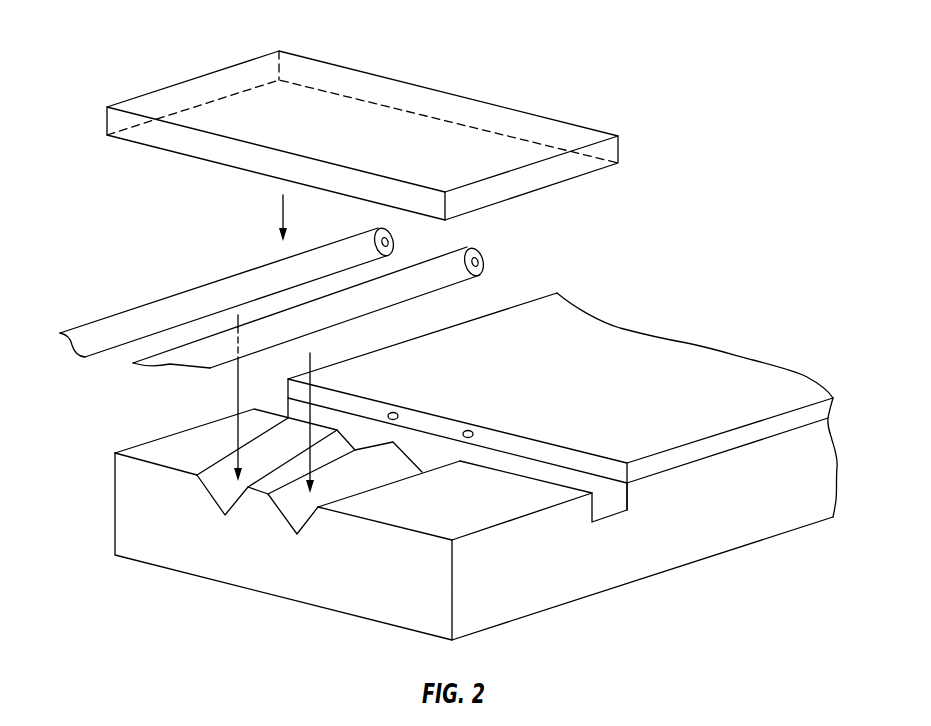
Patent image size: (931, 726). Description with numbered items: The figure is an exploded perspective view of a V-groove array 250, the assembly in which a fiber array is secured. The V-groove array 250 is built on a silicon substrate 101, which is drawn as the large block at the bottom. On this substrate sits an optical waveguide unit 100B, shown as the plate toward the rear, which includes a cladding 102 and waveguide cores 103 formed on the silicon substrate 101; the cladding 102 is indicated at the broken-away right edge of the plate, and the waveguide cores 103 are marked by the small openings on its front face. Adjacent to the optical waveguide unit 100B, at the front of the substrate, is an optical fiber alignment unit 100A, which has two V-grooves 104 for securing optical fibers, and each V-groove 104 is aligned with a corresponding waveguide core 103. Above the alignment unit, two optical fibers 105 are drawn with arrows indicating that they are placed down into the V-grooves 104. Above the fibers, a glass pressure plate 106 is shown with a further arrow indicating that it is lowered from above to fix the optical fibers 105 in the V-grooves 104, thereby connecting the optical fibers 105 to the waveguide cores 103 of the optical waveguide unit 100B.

The V-groove array 250 is at (148, 38).
The glass pressure plate 106 is at (448, 93).
The optical fibers 105 is at (177, 308).
The optical fiber alignment unit 100A is at (184, 440).
The optical waveguide unit 100B is at (594, 342).
The silicon substrate 101 is at (700, 530).
The cladding 102 is at (787, 407).
The waveguide cores 103 is at (469, 430).
The V-grooves 104 is at (298, 508).